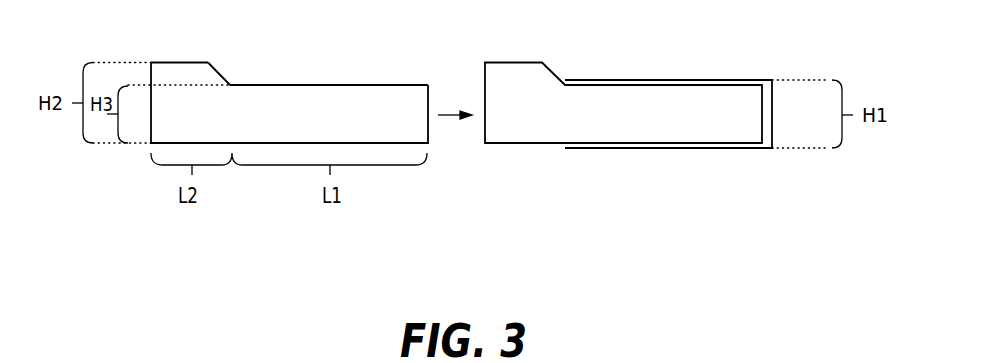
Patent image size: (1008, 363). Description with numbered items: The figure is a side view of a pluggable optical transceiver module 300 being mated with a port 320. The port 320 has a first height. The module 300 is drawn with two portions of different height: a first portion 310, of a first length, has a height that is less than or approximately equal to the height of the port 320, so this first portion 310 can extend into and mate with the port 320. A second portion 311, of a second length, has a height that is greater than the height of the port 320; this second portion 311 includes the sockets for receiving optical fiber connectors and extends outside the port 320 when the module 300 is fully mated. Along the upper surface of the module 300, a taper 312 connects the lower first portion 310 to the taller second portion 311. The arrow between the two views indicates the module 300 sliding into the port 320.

The pluggable optical transceiver module 300 is at (253, 124).
The first portion L1 310 is at (370, 85).
The second portion L2 311 is at (183, 62).
The taper 312 is at (220, 72).
The port 320 is at (755, 80).